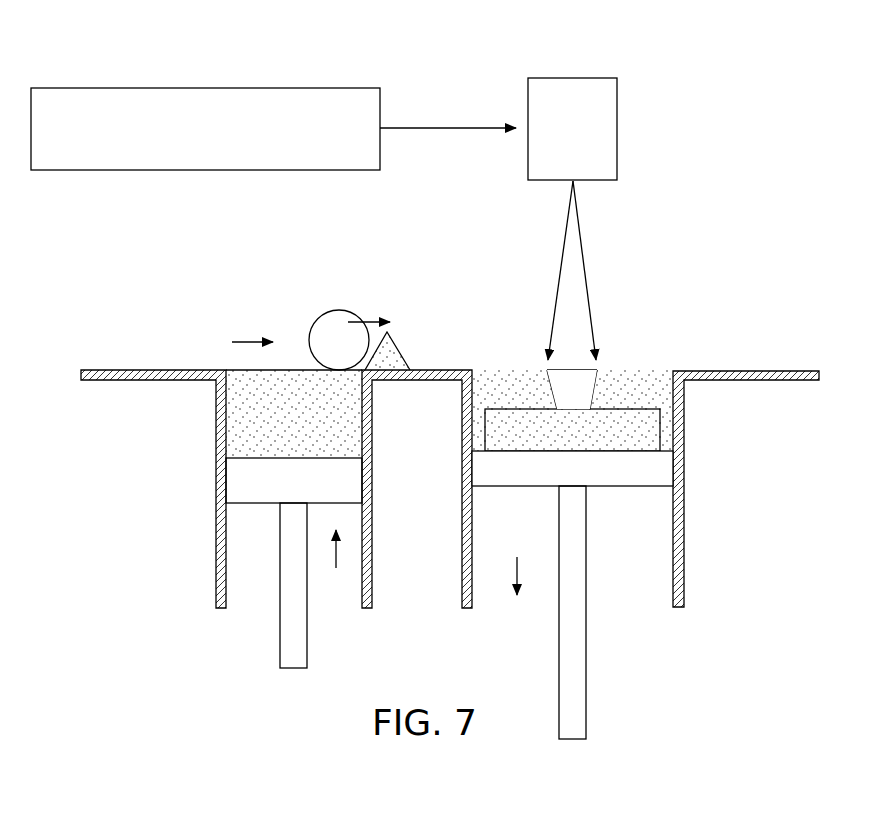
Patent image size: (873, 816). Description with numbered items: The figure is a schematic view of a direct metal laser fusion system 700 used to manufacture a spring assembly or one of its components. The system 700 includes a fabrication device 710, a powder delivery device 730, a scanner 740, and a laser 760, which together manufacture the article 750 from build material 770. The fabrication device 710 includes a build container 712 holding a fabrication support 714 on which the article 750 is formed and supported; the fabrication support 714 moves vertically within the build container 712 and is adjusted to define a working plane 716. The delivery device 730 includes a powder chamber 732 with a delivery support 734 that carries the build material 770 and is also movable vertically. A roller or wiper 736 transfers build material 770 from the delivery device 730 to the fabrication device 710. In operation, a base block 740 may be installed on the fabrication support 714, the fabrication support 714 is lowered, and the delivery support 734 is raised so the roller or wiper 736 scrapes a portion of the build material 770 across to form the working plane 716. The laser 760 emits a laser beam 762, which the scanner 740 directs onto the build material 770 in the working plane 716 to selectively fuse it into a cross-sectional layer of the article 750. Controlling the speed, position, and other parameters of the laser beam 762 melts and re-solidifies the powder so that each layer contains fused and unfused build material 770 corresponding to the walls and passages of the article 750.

The DMLF system 700 is at (731, 97).
The fabrication device 710 is at (722, 496).
The build container 712 is at (680, 395).
The fabrication support 714 is at (632, 487).
The working plane 716 is at (657, 374).
The powder delivery device 730 is at (140, 471).
The powder chamber 732 is at (223, 425).
The delivery support 734 is at (234, 478).
The roller or wiper 736 is at (340, 311).
The scanner 740 is at (573, 78).
The article 750 is at (532, 363).
The laser 760 is at (212, 88).
The laser beam 762 is at (458, 128).
The build material 770 is at (234, 405).